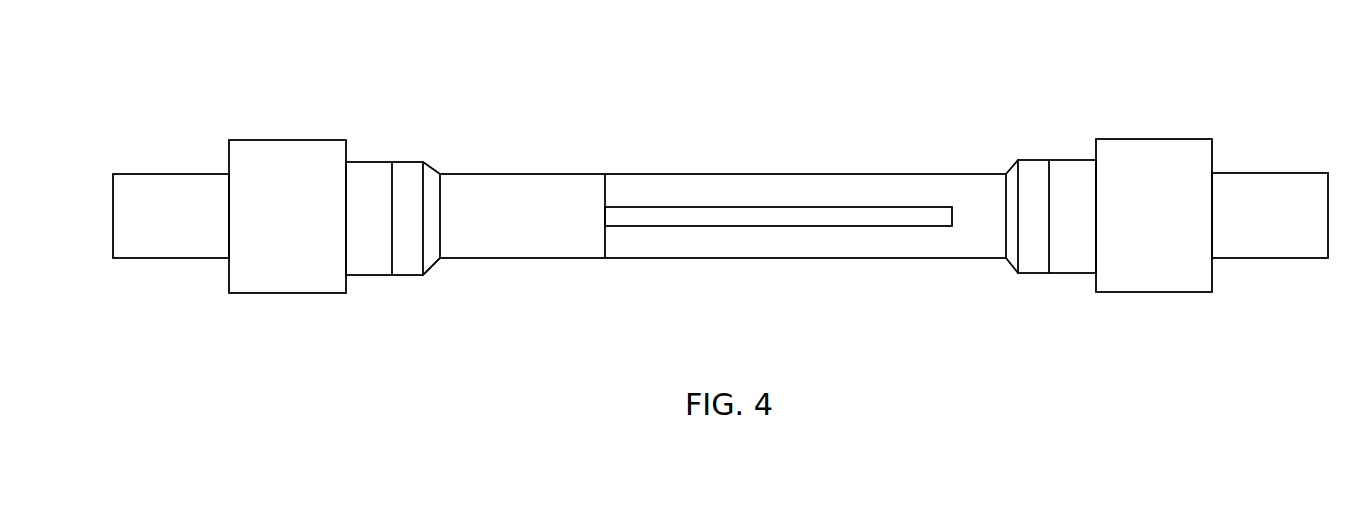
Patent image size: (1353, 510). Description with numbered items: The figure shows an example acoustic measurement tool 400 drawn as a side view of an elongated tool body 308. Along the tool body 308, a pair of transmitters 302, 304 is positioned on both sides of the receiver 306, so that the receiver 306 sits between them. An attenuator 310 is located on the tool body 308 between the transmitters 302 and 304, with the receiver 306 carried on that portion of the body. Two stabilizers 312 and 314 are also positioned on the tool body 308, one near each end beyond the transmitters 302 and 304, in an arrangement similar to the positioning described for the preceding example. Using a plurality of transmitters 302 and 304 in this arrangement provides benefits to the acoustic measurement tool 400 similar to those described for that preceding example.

The acoustic measurement tool 400 is at (198, 60).
The transmitter 302 is at (1036, 274).
The transmitter 304 is at (404, 276).
The receiver 306 is at (778, 206).
The tool body 308 is at (1239, 259).
The attenuator 310 is at (518, 173).
The stabilizer 312 is at (1152, 139).
The stabilizer 314 is at (287, 140).